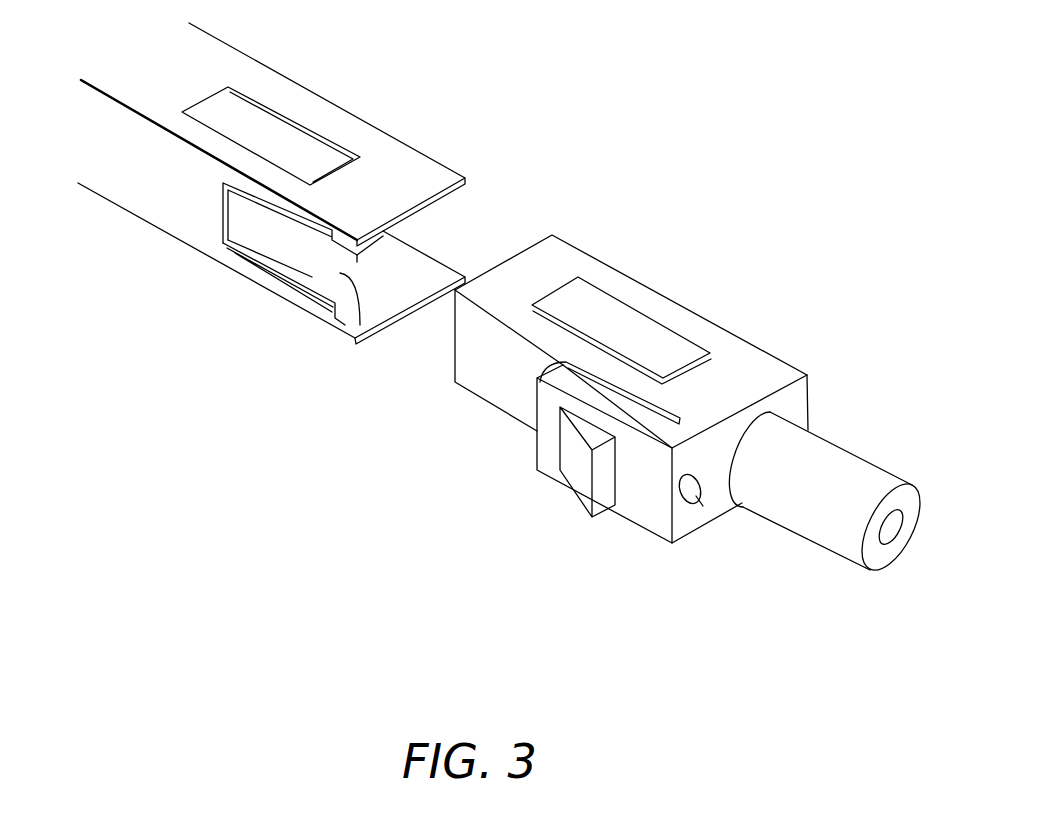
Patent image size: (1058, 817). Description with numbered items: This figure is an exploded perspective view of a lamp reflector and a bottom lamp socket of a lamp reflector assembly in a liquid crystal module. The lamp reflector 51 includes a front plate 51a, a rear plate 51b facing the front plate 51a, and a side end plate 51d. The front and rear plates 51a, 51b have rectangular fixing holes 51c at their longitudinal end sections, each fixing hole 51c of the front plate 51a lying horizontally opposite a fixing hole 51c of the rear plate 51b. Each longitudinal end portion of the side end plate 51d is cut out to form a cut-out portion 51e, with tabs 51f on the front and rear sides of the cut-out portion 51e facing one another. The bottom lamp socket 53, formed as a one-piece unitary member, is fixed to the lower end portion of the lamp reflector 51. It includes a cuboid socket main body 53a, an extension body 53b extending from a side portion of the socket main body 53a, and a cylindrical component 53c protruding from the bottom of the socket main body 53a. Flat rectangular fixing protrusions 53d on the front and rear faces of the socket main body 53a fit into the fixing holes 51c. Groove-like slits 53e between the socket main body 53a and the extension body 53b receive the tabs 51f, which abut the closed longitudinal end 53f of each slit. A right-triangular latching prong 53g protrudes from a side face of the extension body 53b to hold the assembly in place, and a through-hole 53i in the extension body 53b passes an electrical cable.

The lamp reflector 51 is at (293, 77).
The front plate 51a is at (430, 163).
The rear plate 51b is at (430, 265).
The fixing hole 51c is at (330, 137).
The side end plate 51d is at (157, 204).
The cut-out portion 51e is at (227, 252).
The tab 51f is at (283, 208).
The bottom lamp socket 53 is at (657, 260).
The socket main body 53a is at (585, 252).
The extension body 53b is at (653, 495).
The cylindrical component 53c is at (827, 450).
The fixing protrusion 53d is at (678, 340).
The groove-like slit 53e is at (537, 416).
The closed longitudinal end 53f is at (682, 410).
The latching prong 53g is at (575, 467).
The through-hole 53i is at (705, 533).